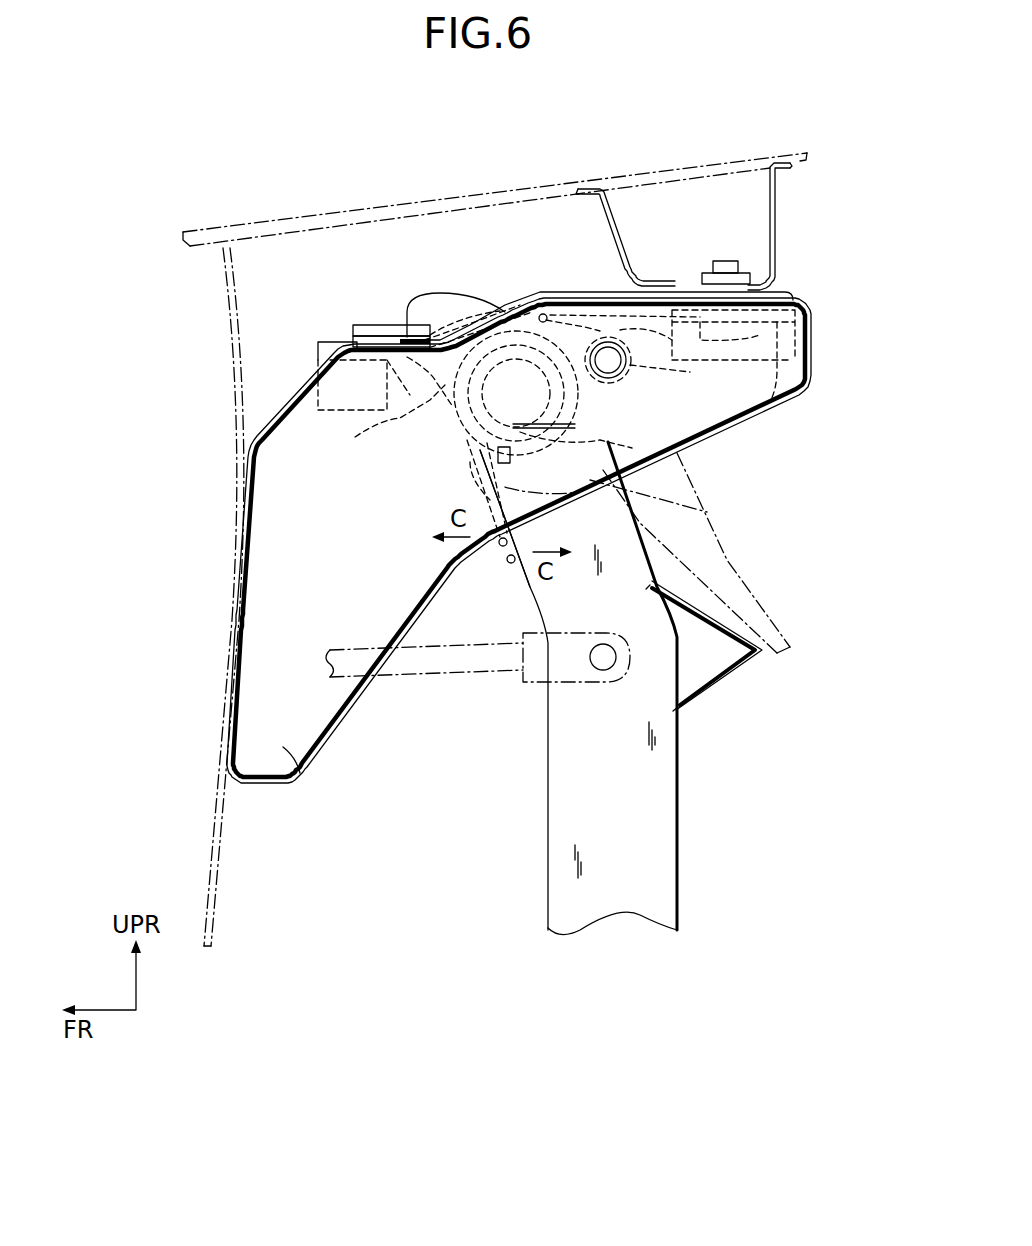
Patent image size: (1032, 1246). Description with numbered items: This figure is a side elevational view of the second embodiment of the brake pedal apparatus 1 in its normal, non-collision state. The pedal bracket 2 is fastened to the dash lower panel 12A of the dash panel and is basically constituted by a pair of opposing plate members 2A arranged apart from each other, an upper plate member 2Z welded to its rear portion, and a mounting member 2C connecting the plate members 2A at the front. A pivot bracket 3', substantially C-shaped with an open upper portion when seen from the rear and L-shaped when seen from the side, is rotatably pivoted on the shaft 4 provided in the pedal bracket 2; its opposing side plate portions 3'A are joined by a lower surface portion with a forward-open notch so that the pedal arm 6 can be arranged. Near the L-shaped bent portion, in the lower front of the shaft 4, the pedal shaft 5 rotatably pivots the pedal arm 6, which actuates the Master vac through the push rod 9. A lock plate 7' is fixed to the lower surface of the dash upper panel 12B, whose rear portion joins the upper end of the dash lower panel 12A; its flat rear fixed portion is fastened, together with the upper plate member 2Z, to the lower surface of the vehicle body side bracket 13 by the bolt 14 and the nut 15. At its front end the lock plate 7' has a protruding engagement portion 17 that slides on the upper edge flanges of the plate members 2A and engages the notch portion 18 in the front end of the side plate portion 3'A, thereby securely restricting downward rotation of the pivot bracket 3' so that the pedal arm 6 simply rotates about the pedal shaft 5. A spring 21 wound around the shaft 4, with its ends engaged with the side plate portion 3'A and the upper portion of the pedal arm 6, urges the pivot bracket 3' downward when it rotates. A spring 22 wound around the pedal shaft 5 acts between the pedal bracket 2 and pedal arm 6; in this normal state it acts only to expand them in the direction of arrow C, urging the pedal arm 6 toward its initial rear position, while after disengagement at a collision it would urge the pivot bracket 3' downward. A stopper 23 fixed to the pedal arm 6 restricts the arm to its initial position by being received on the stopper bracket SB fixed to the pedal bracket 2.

The brake pedal apparatus 1 is at (874, 356).
The pedal bracket 2 is at (808, 387).
The plate member 2A is at (300, 776).
The mounting member 2C is at (313, 402).
The upper plate member 2Z is at (781, 412).
The pivot bracket 3' is at (485, 434).
The side plate portion 3'A is at (387, 414).
The shaft 4 is at (692, 372).
The pedal shaft 5 is at (470, 462).
The pedal arm 6 is at (680, 855).
The lock plate 7' is at (611, 290).
The push rod 9 is at (410, 677).
The dash lower panel 12A is at (228, 795).
The dash upper panel 12B is at (297, 218).
The vehicle body side bracket 13 is at (775, 178).
The bolt 14 is at (809, 350).
The nut 15 is at (748, 274).
The engagement portion 17 is at (360, 325).
The notch portion 18 is at (400, 336).
The spring 21 is at (544, 313).
The spring 22 is at (505, 548).
The stopper 23 is at (738, 680).
The stopper bracket SB is at (708, 513).